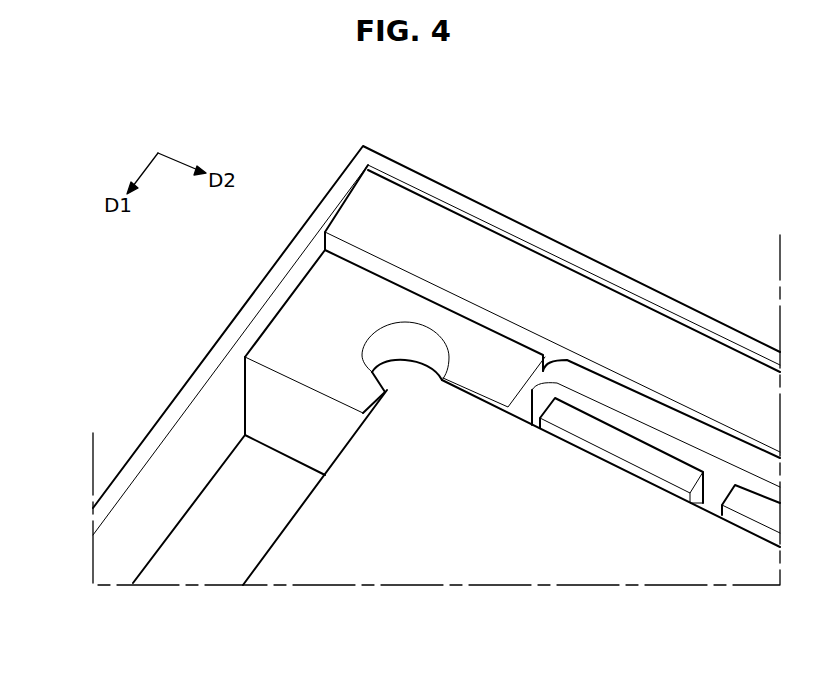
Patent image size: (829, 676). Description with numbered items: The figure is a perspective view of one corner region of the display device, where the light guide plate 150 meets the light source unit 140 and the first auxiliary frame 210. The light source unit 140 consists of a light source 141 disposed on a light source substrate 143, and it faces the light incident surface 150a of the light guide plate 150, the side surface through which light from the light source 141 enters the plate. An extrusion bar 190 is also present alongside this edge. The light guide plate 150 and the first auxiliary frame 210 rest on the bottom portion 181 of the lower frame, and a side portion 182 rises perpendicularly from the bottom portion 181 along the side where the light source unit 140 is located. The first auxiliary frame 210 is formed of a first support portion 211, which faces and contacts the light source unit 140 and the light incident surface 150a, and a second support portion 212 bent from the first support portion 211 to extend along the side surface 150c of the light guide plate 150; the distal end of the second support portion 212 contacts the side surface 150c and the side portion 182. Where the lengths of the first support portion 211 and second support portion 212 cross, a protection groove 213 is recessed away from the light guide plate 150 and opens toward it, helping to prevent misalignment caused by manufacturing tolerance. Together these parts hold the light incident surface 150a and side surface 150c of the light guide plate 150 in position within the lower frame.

The light source unit 140 is at (660, 207).
The light source 141 is at (602, 433).
The light source substrate 143 is at (652, 412).
The light guide plate 150 is at (442, 542).
The light incident surface 150a is at (522, 420).
The side surface 150c is at (263, 553).
The bottom portion 181 is at (230, 510).
The side portion 182 is at (165, 485).
The extrusion bar 190 is at (727, 372).
The first auxiliary frame 210 is at (482, 123).
The first support portion 211 is at (482, 352).
The second support portion 212 is at (305, 358).
The protection groove 213 is at (393, 348).